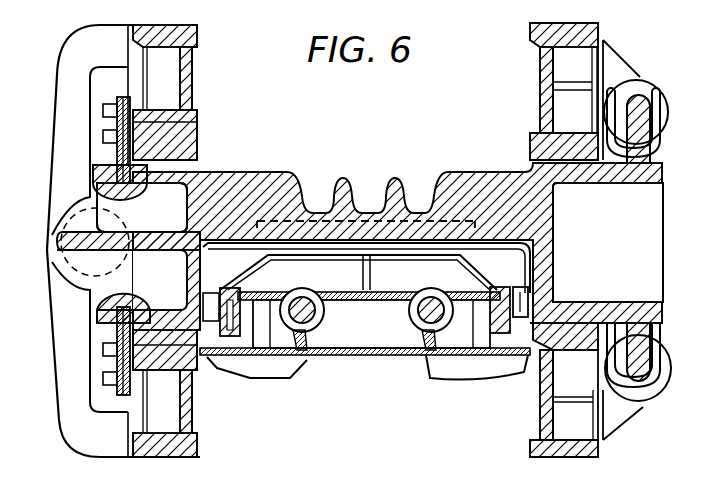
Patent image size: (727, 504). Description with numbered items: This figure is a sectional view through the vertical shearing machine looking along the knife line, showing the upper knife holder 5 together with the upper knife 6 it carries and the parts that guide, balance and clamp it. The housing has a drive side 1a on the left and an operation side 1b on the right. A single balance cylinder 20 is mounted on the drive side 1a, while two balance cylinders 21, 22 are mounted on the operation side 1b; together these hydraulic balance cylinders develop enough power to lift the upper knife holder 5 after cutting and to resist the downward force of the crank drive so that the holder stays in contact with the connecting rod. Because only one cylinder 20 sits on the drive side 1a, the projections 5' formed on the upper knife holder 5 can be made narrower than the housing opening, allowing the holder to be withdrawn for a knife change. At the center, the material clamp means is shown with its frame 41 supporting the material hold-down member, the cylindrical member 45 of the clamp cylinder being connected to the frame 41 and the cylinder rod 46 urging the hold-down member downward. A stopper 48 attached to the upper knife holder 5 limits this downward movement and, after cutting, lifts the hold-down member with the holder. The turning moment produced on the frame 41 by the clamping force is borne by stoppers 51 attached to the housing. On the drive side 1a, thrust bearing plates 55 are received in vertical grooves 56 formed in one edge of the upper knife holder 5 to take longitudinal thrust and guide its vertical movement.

The drive side 1a is at (197, 37).
The operation side 1b is at (548, 72).
The upper knife holder 5 is at (621, 242).
The projection 5' is at (359, 241).
The upper knife 6 is at (432, 221).
The balance cylinder 20 is at (137, 212).
The balance cylinder 21 is at (647, 397).
The balance cylinder 22 is at (653, 88).
The frame 41 is at (368, 357).
The cylindrical member 45 is at (302, 290).
The cylinder rod 46 is at (313, 292).
The stopper 48 is at (528, 292).
The stopper 51 is at (513, 357).
The thrust bearing plate 55 is at (197, 118).
The vertical groove 56 is at (115, 180).